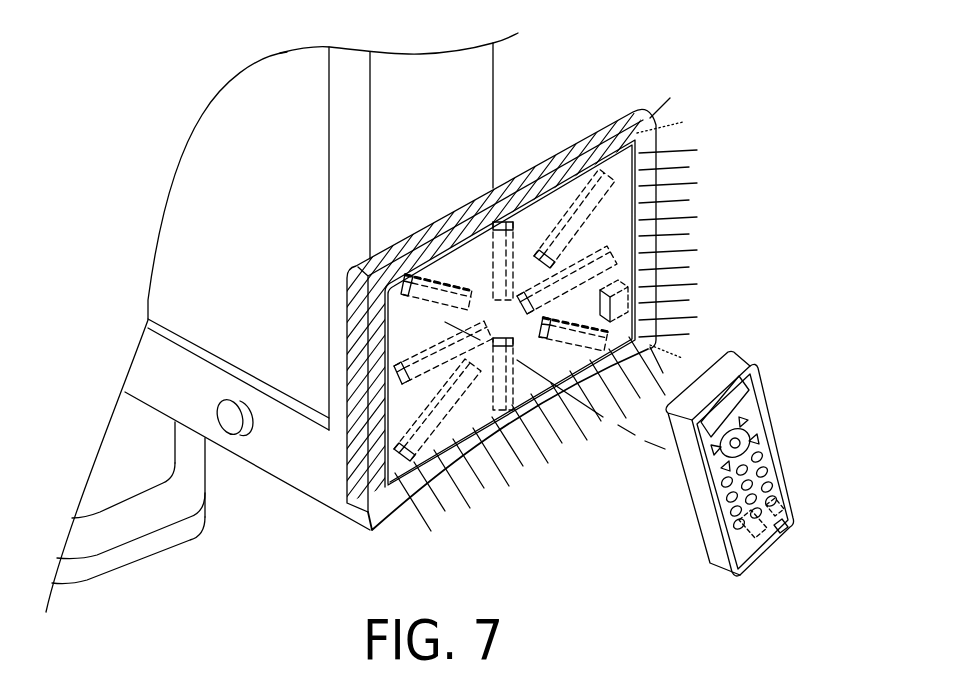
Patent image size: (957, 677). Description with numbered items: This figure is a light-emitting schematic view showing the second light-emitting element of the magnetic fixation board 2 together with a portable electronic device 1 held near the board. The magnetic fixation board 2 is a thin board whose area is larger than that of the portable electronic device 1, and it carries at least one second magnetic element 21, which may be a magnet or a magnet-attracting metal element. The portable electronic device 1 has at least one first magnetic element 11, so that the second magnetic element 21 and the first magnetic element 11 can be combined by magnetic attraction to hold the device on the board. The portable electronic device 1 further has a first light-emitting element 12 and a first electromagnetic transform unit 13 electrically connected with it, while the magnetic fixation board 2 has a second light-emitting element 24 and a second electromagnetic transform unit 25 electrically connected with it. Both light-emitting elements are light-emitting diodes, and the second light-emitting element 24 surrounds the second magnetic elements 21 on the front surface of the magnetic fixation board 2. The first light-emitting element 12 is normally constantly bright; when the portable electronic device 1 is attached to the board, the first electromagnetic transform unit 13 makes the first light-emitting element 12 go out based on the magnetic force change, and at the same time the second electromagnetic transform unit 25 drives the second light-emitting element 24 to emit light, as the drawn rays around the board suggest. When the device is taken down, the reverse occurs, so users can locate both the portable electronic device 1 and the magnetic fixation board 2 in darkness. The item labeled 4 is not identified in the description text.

The portable electronic device 1 is at (772, 464).
The first magnetic element 11 is at (760, 527).
The first light-emitting element 12 is at (787, 527).
The first electromagnetic transform unit 13 is at (793, 497).
The magnetic fixation board 2 is at (496, 280).
The second magnetic element 21 is at (578, 207).
The second light-emitting element 24 is at (641, 213).
The second electromagnetic transform unit 25 is at (630, 303).
The monitor 4 is at (203, 117).